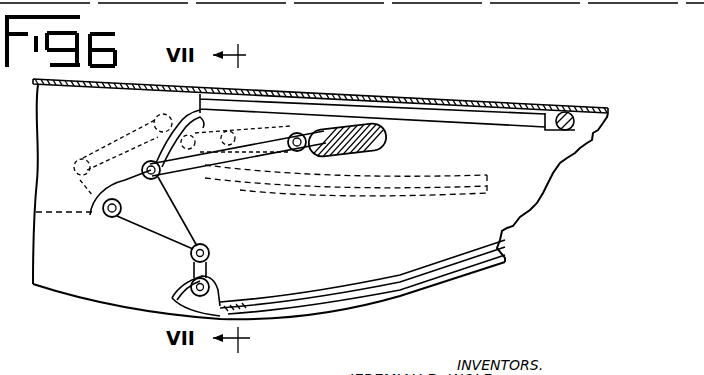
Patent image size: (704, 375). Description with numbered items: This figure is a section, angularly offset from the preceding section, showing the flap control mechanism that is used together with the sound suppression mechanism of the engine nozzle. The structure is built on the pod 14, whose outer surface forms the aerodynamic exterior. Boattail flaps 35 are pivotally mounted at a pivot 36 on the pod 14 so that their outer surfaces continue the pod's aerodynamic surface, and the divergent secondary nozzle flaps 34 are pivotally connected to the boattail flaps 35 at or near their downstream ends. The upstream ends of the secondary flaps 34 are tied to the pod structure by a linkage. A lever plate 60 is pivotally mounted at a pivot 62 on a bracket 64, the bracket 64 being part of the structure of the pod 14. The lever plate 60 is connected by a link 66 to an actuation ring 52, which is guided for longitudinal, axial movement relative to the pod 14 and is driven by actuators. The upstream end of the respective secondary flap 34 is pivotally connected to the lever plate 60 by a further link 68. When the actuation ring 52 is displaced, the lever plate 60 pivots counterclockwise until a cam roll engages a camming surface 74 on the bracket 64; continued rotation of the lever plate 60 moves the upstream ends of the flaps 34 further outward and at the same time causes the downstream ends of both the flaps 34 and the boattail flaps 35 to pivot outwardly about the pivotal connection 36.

The pod 14 is at (443, 98).
The secondary nozzle flap 34 is at (310, 315).
The boattail flap 35 is at (587, 110).
The pivotal mounting of boattail flap 36 is at (561, 111).
The actuation ring 52 is at (377, 80).
The lever plate 60 is at (198, 231).
The pivot of lever plate 62 is at (108, 218).
The bracket 64 is at (48, 218).
The link 66 is at (218, 168).
The link 68 is at (208, 268).
The camming surface 74 is at (196, 124).